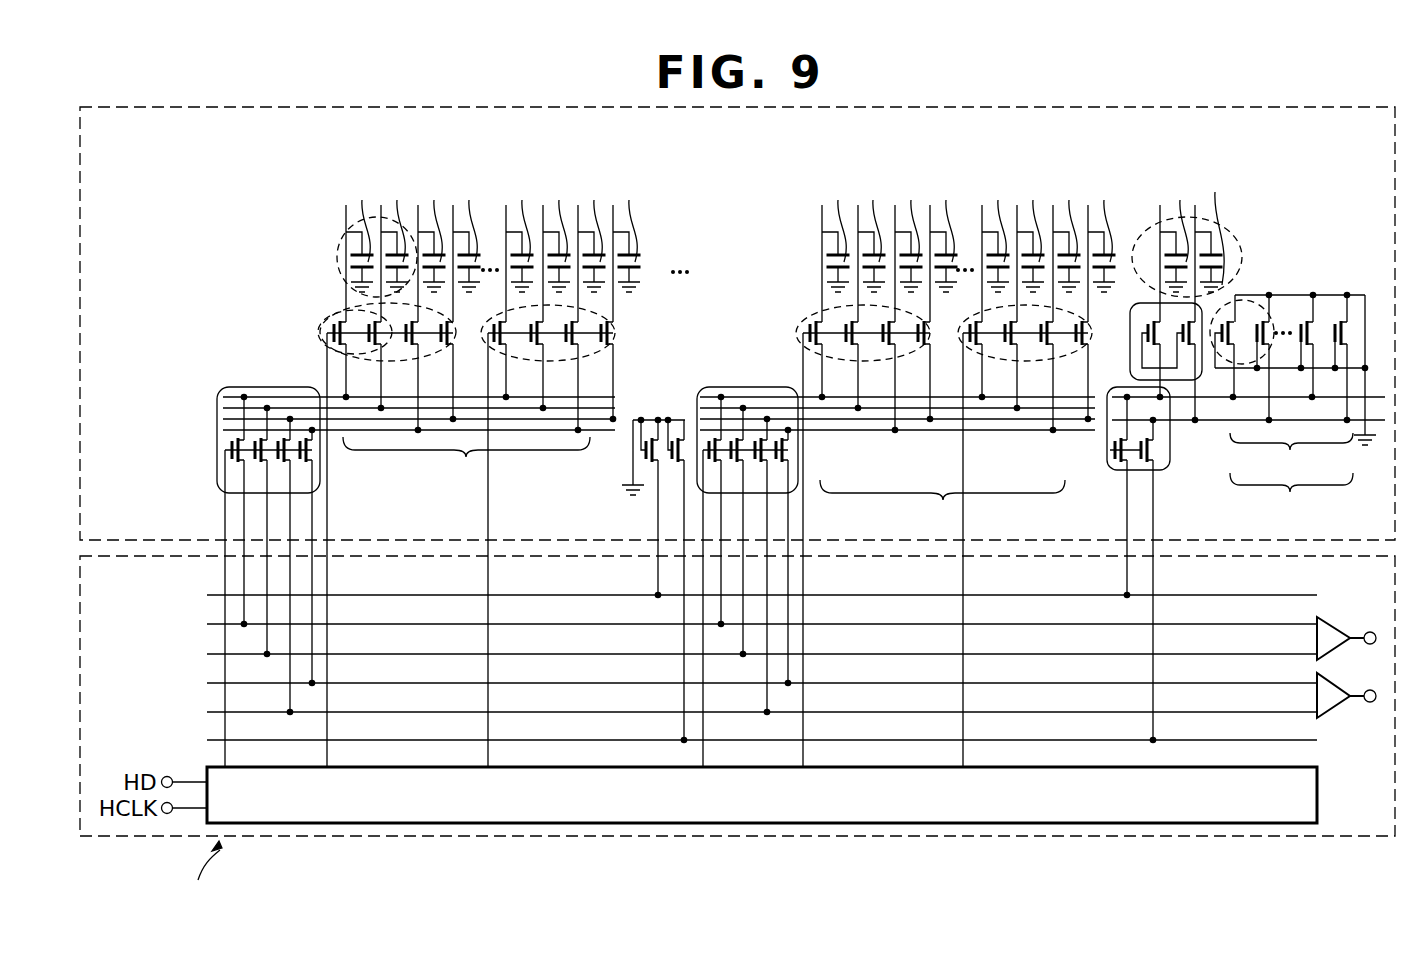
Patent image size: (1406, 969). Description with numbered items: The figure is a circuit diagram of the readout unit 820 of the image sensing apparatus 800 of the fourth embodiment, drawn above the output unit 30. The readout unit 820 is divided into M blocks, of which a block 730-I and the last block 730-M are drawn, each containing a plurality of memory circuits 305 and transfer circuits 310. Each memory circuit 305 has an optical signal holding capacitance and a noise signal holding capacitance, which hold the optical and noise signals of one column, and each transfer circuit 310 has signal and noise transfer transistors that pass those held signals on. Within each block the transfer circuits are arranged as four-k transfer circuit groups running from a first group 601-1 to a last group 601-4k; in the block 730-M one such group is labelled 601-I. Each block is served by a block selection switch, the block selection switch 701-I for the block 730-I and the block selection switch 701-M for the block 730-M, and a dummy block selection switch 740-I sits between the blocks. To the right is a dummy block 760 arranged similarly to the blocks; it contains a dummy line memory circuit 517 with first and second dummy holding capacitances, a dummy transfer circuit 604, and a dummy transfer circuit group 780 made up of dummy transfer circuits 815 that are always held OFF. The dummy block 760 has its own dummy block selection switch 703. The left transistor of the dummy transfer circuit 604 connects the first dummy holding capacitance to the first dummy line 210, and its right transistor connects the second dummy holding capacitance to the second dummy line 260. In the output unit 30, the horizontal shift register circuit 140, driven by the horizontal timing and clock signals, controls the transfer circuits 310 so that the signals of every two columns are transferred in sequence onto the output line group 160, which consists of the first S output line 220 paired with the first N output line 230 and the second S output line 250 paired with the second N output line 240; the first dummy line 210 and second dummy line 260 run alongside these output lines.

The readout unit 820 is at (1336, 105).
The output unit 30 is at (1343, 838).
The image sensing apparatus 800 is at (198, 875).
The block 730-I is at (225, 187).
The block 730-M is at (1135, 187).
The dummy block 760 is at (1375, 187).
The memory circuit 305 is at (339, 236).
The transfer circuit 310 is at (352, 310).
The transfer circuit group 601-1 is at (358, 312).
The transfer circuit group 601-4k is at (615, 333).
The transfer circuit group 601-I is at (801, 318).
The block selection switch 701-I is at (265, 387).
The block selection switch 701-M is at (745, 387).
The dummy block selection switch 740-I is at (633, 412).
The dummy line memory circuit 517 is at (1240, 240).
The dummy transfer circuit 604 is at (1187, 383).
The dummy block selection switch 703 is at (1108, 455).
The dummy transfer circuit 815 is at (1250, 300).
The dummy transfer circuit group 780 is at (1291, 479).
The output line group 160 is at (701, 656).
The first dummy line 210 is at (211, 595).
The first S output line 220 is at (211, 624).
The first N output line 230 is at (211, 654).
The second N output line 240 is at (211, 683).
The second S output line 250 is at (211, 712).
The second dummy line 260 is at (735, 729).
The horizontal shift register circuit 140 is at (1320, 797).